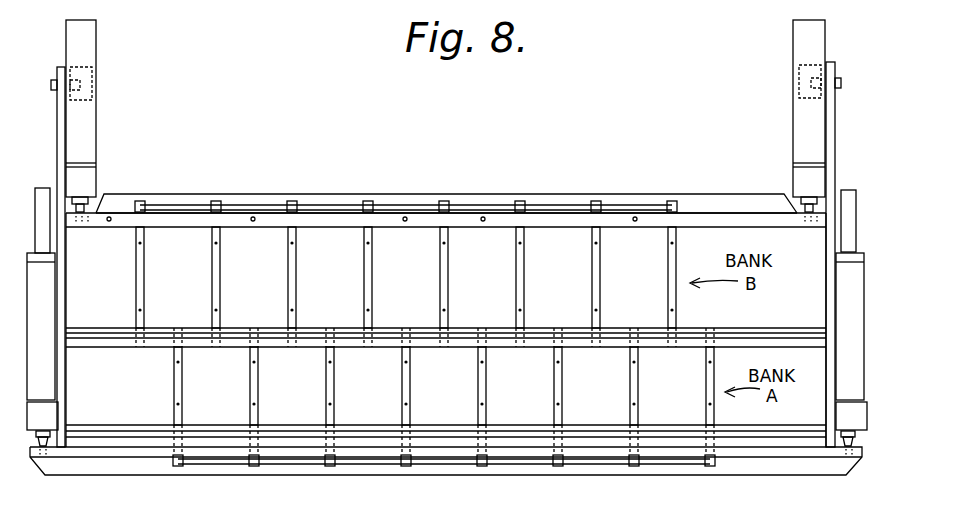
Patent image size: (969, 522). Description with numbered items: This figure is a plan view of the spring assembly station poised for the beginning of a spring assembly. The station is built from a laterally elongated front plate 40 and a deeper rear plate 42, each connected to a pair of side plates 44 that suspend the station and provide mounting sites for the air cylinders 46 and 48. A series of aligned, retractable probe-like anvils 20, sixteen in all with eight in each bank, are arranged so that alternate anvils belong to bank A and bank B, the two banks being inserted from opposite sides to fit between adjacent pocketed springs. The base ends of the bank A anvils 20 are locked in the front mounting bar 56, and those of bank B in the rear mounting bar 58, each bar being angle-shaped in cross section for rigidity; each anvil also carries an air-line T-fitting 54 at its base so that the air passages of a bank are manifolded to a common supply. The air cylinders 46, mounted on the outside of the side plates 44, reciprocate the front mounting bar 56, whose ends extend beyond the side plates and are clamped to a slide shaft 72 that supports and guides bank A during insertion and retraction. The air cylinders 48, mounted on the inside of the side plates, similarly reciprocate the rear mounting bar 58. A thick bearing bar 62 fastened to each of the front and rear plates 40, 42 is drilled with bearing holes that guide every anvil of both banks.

The anvils 20 is at (518, 278).
The front plate 40 is at (83, 428).
The rear plate 42 is at (112, 347).
The side plates 44 is at (62, 120).
The air cylinders 46 is at (46, 375).
The air cylinders 48 is at (90, 139).
The air-line T-fitting 54 is at (365, 203).
The front mounting bar 56 is at (103, 453).
The rear mounting bar 58 is at (176, 215).
The bearing bar 62 is at (107, 327).
The slide shaft 72 is at (45, 239).